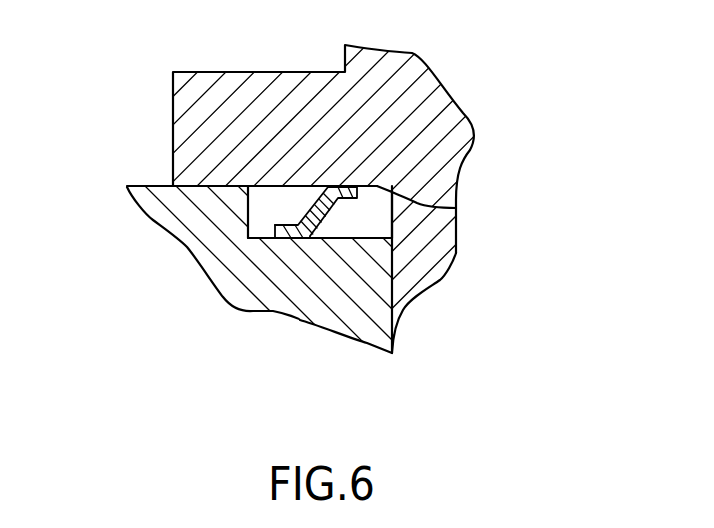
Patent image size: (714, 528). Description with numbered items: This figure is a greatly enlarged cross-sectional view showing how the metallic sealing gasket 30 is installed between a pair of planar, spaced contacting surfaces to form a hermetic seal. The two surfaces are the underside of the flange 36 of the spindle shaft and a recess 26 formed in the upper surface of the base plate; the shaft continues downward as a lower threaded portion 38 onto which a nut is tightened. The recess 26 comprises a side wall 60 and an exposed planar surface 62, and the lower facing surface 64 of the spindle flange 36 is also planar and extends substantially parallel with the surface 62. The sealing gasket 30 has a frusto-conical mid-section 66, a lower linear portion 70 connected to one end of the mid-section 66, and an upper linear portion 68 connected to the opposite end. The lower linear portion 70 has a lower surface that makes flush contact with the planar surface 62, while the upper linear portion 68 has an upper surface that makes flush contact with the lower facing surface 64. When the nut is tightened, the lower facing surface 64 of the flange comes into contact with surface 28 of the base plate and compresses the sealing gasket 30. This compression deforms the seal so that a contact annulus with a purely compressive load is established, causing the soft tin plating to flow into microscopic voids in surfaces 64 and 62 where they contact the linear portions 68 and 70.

The recess 26 is at (267, 213).
The surface of the base plate 28 is at (130, 186).
The metallic sealing gasket 30 is at (316, 228).
The flange 36 is at (207, 126).
The lower threaded portion 38 is at (430, 253).
The side wall 60 is at (247, 202).
The exposed planar surface 62 is at (360, 238).
The lower facing surface 64 is at (274, 187).
The frusto-conical mid-section 66 is at (317, 218).
The upper linear portion 68 is at (456, 208).
The lower linear portion 70 is at (250, 238).